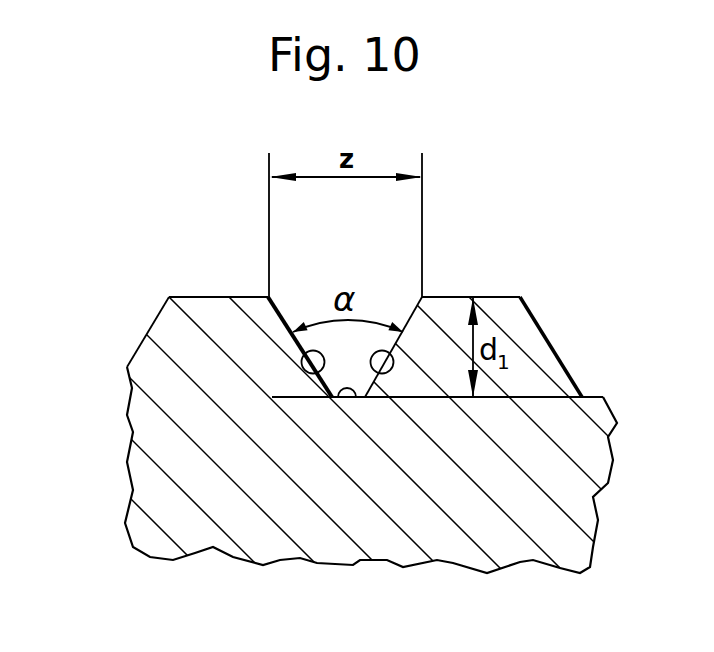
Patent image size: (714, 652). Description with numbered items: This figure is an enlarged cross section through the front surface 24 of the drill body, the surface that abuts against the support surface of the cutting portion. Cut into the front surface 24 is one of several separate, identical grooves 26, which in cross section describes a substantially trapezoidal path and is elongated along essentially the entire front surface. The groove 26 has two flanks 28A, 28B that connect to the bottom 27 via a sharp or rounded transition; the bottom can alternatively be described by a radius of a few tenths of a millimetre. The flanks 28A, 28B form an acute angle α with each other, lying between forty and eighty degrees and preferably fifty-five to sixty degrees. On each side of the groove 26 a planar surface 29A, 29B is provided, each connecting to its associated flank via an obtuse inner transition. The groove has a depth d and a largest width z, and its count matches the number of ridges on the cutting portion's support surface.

The front surface 24 is at (460, 210).
The groove 26 is at (317, 284).
The bottom 27 is at (338, 398).
The flank 28A is at (308, 367).
The flank 28B is at (529, 443).
The planar surface 29A is at (215, 297).
The planar surface 29B is at (495, 297).